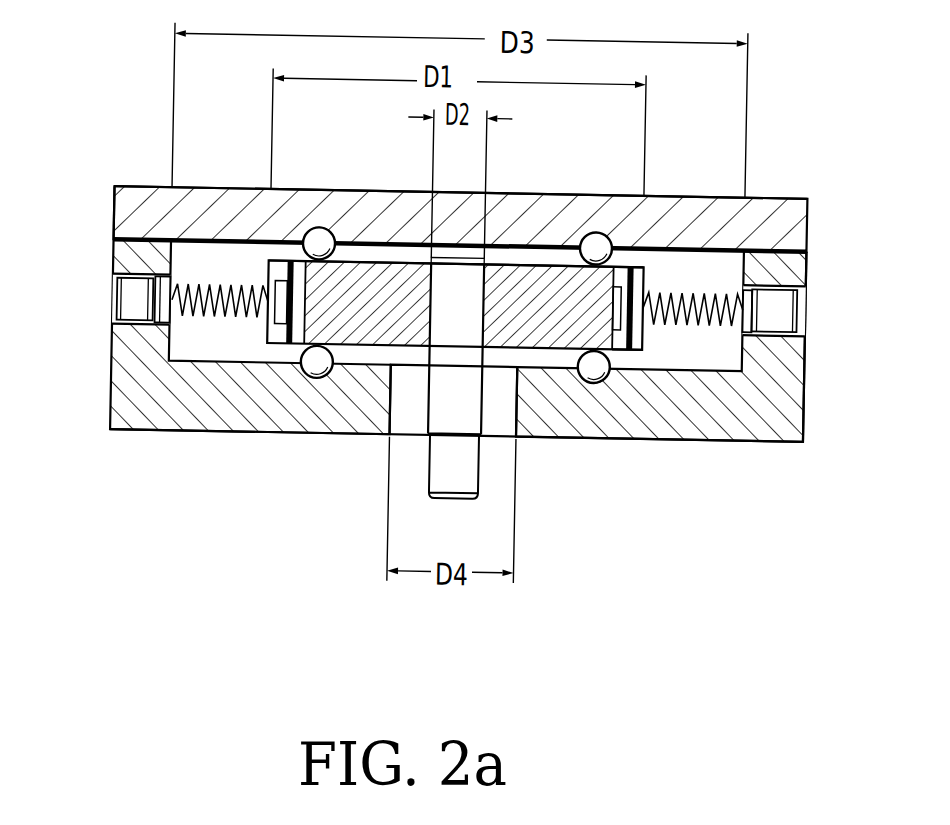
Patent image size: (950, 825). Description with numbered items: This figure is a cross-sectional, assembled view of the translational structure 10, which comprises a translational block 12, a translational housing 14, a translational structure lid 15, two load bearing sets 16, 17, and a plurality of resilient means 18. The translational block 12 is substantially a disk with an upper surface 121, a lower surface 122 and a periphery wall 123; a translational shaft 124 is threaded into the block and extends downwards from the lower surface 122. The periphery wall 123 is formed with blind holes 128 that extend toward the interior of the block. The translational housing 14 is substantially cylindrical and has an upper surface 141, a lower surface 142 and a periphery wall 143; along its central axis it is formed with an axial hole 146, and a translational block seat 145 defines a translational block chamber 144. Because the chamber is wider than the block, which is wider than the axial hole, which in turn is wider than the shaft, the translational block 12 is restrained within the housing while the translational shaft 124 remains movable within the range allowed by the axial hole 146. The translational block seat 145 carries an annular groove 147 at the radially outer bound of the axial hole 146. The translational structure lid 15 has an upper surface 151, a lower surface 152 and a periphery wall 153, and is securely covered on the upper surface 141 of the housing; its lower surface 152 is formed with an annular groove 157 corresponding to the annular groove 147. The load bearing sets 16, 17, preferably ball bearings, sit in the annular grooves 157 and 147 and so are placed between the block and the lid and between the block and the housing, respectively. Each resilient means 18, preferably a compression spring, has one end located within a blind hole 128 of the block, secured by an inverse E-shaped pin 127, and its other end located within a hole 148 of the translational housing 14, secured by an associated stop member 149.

The translational structure 10 is at (456, 298).
The translational block 12 is at (501, 347).
The translational housing 14 is at (462, 326).
The translational structure lid 15 is at (419, 172).
The load bearing set 16 is at (328, 228).
The load bearing set 17 is at (604, 377).
The resilient means 18 is at (218, 285).
The upper surface 121 is at (530, 262).
The lower surface 122 is at (549, 348).
The periphery wall 123 is at (640, 273).
The translational shaft 124 is at (458, 482).
The inverse E-shaped pin 127 is at (633, 350).
The blind hole 128 is at (638, 325).
The upper surface 141 is at (782, 232).
The lower surface 142 is at (776, 437).
The periphery wall 143 is at (805, 264).
The translational block chamber 144 is at (235, 264).
The translational block seat 145 is at (329, 415).
The axial hole 146 is at (412, 421).
The annular groove 147 is at (584, 368).
The hole 148 is at (782, 319).
The stop member 149 is at (783, 297).
The upper surface 151 is at (150, 191).
The lower surface 152 is at (114, 259).
The periphery wall 153 is at (118, 206).
The annular groove 157 is at (305, 228).